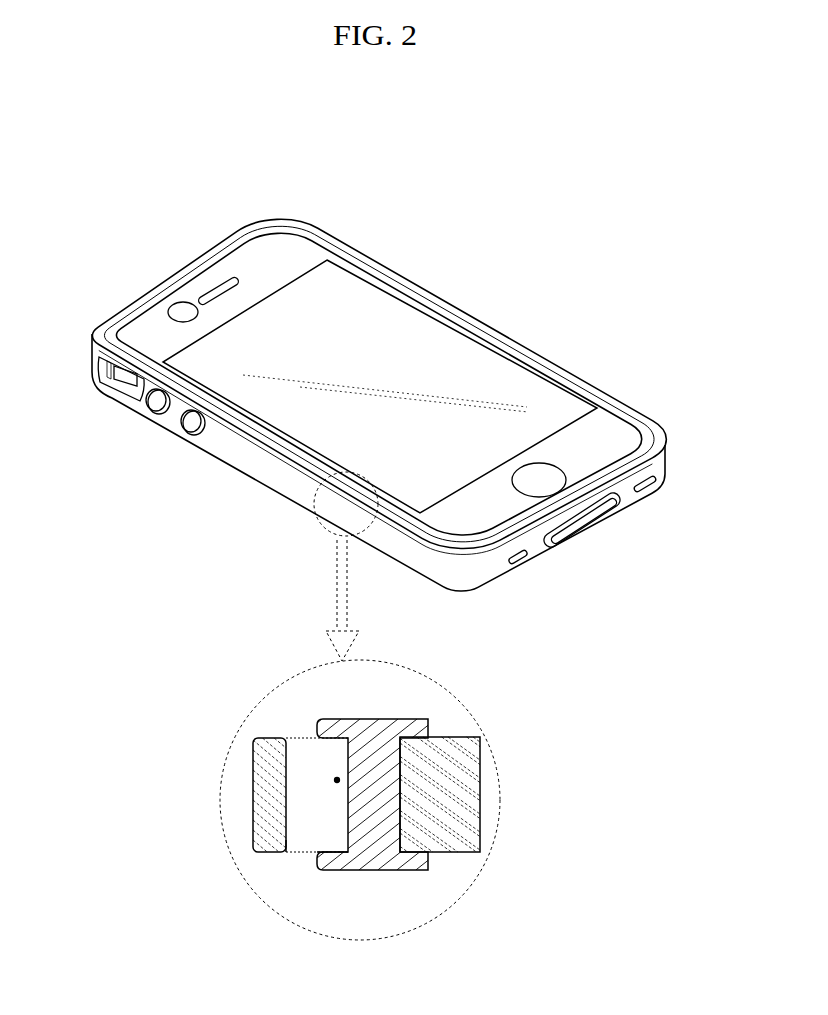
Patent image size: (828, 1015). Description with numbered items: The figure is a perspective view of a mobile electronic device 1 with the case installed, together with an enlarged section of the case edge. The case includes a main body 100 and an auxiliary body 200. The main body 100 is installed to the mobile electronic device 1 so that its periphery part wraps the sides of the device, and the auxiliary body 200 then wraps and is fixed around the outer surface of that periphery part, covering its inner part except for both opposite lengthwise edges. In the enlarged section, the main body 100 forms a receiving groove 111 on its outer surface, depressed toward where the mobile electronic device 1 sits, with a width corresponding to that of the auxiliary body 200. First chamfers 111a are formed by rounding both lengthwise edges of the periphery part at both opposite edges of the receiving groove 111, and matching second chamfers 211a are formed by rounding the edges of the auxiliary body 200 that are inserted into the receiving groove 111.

The mobile electronic device 1 is at (413, 330).
The main body 100 is at (347, 250).
The auxiliary body 200 is at (247, 450).
The receiving groove 111 is at (337, 780).
The first chamfers 111a is at (320, 852).
The second chamfers 211a is at (285, 853).